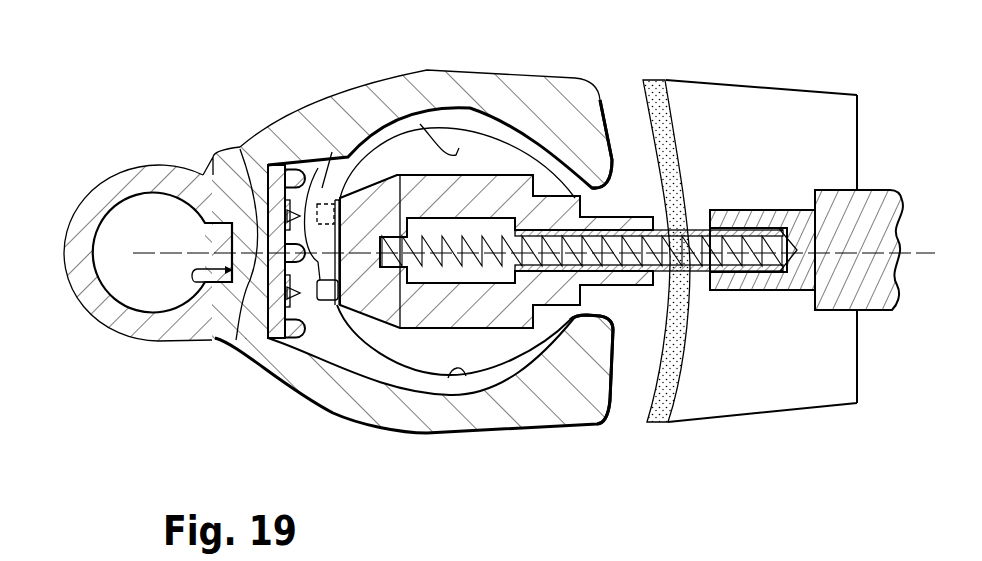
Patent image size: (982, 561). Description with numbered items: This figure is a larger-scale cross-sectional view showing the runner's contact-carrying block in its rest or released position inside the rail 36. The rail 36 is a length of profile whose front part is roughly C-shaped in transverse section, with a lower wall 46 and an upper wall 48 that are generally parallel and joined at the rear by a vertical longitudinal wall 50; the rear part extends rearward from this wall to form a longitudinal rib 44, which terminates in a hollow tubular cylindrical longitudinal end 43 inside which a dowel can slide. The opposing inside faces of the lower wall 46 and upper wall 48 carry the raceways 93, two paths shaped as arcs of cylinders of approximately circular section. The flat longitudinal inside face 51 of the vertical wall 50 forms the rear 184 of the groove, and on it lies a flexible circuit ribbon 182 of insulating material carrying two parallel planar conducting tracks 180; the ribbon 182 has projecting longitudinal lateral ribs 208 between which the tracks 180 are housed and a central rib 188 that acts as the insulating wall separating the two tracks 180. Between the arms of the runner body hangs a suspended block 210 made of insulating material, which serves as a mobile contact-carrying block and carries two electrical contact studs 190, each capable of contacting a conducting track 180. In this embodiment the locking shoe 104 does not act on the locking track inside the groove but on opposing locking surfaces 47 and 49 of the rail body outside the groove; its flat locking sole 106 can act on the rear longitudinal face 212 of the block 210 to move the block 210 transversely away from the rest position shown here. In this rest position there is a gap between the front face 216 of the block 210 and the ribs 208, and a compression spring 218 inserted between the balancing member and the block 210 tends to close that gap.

The rail 36 is at (299, 420).
The hollow tubular cylindrical longitudinal end 43 is at (100, 300).
The longitudinal rib 44 is at (113, 158).
The lower wall 46 is at (517, 407).
The opposing locking surface 47 is at (607, 398).
The upper wall 48 is at (428, 84).
The inside face of the upper wall / opposing locking surface 49 is at (603, 93).
The vertical longitudinal wall 50 is at (190, 295).
The flat longitudinal inside face 51 is at (210, 182).
The raceway 93 is at (460, 150).
The locking shoe 104 is at (738, 100).
The flat locking sole 106 is at (641, 109).
The conducting track 180 is at (267, 207).
The flexible circuit ribbon 182 is at (266, 340).
The channel / rear of the groove 184 is at (405, 333).
The central rib 188 is at (311, 225).
The electrical contact stud 190 is at (327, 202).
The lateral rib 208 is at (299, 155).
The suspended block 210 is at (540, 372).
The rear longitudinal face 212 is at (650, 277).
The front face 216 is at (397, 176).
The compression spring 218 is at (489, 250).